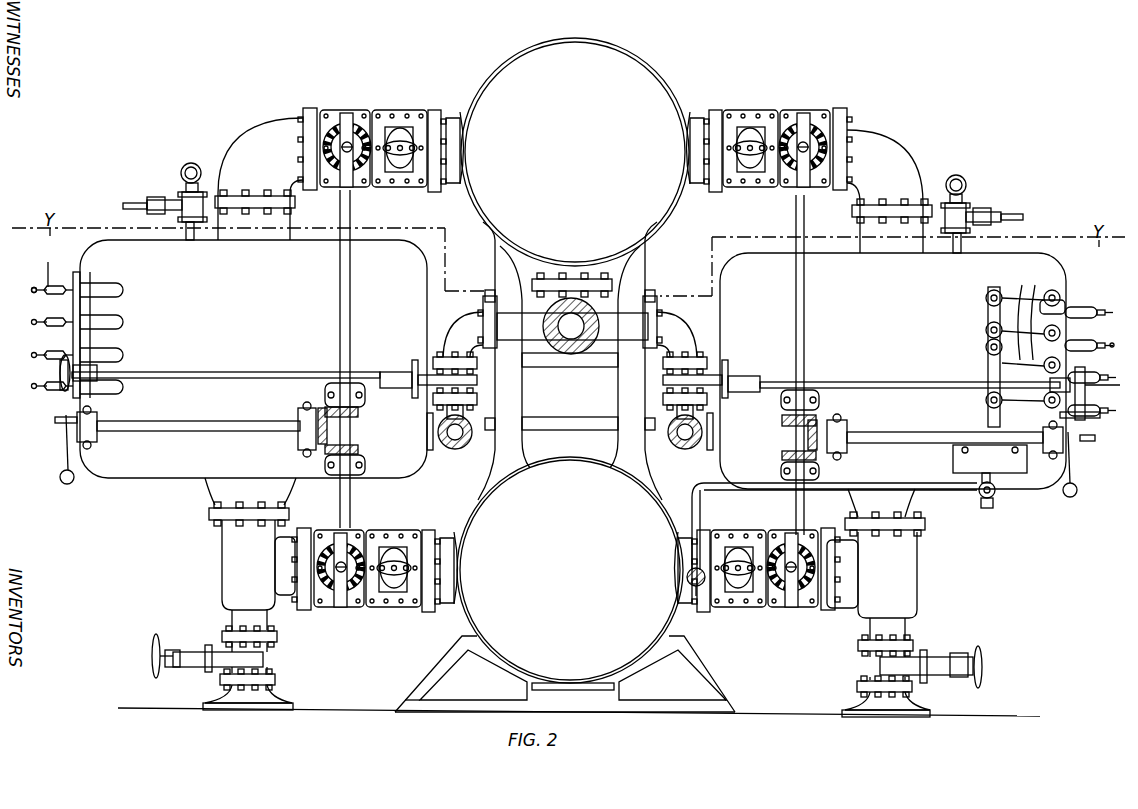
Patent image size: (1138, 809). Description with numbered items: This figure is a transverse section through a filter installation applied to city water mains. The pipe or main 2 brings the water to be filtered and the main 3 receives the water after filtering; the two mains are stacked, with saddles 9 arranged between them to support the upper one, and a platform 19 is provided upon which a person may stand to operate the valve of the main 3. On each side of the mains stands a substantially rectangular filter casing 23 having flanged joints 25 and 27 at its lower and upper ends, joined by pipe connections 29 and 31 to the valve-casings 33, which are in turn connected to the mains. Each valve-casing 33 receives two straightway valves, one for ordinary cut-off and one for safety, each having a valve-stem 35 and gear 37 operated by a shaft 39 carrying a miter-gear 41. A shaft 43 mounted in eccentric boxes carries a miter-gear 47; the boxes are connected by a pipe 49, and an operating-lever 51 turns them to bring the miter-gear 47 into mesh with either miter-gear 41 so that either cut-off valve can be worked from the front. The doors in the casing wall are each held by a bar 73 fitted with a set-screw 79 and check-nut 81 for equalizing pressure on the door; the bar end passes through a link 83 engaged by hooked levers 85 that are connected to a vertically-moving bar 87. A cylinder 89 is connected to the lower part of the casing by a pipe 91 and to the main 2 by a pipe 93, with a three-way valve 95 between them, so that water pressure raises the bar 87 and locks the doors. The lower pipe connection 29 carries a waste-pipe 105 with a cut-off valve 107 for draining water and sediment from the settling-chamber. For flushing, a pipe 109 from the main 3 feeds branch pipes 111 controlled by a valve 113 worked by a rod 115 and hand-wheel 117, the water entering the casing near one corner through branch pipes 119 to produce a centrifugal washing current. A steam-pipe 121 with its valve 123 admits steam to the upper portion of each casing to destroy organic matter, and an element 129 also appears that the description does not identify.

The pipe or main 2 is at (478, 513).
The pipe or main 3 is at (635, 62).
The supports or saddles 9 is at (505, 262).
The platform 19 is at (58, 376).
The casing 23 is at (573, 364).
The flanged joint 25 is at (232, 490).
The flanged joint 27 is at (248, 222).
The pipe connection 29 is at (222, 572).
The pipe connection 31 is at (255, 130).
The valve-casing 33 is at (380, 110).
The valve-stem 35 is at (345, 145).
The gear 37 is at (338, 112).
The shaft 39 is at (351, 314).
The miter-gear 41 is at (358, 415).
The shaft 43 is at (55, 420).
The miter-gear 47 is at (330, 428).
The pipe 49 is at (150, 430).
The operating-lever 51 is at (66, 462).
The bar 73 is at (60, 288).
The set-screw 79 is at (34, 287).
The check-nut 81 is at (1108, 432).
The link 83 is at (1075, 300).
The levers 85 is at (1023, 313).
The vertically-moving bar 87 is at (988, 306).
The cylinder 89 is at (1018, 478).
The pipe 91 is at (972, 505).
The pipe 93 is at (940, 492).
The three-way valve 95 is at (990, 510).
The waste-pipe 105 is at (270, 670).
The cut-off valve 107 is at (225, 660).
The pipe 109 is at (575, 356).
The branch pipes 111 is at (462, 328).
The valve 113 is at (396, 372).
The rod 115 is at (255, 378).
The hand-wheel 117 is at (100, 372).
The branch pipes 119 is at (455, 450).
The steam-pipe 121 is at (188, 240).
The valve 123 is at (997, 215).
The valve 129 is at (150, 208).